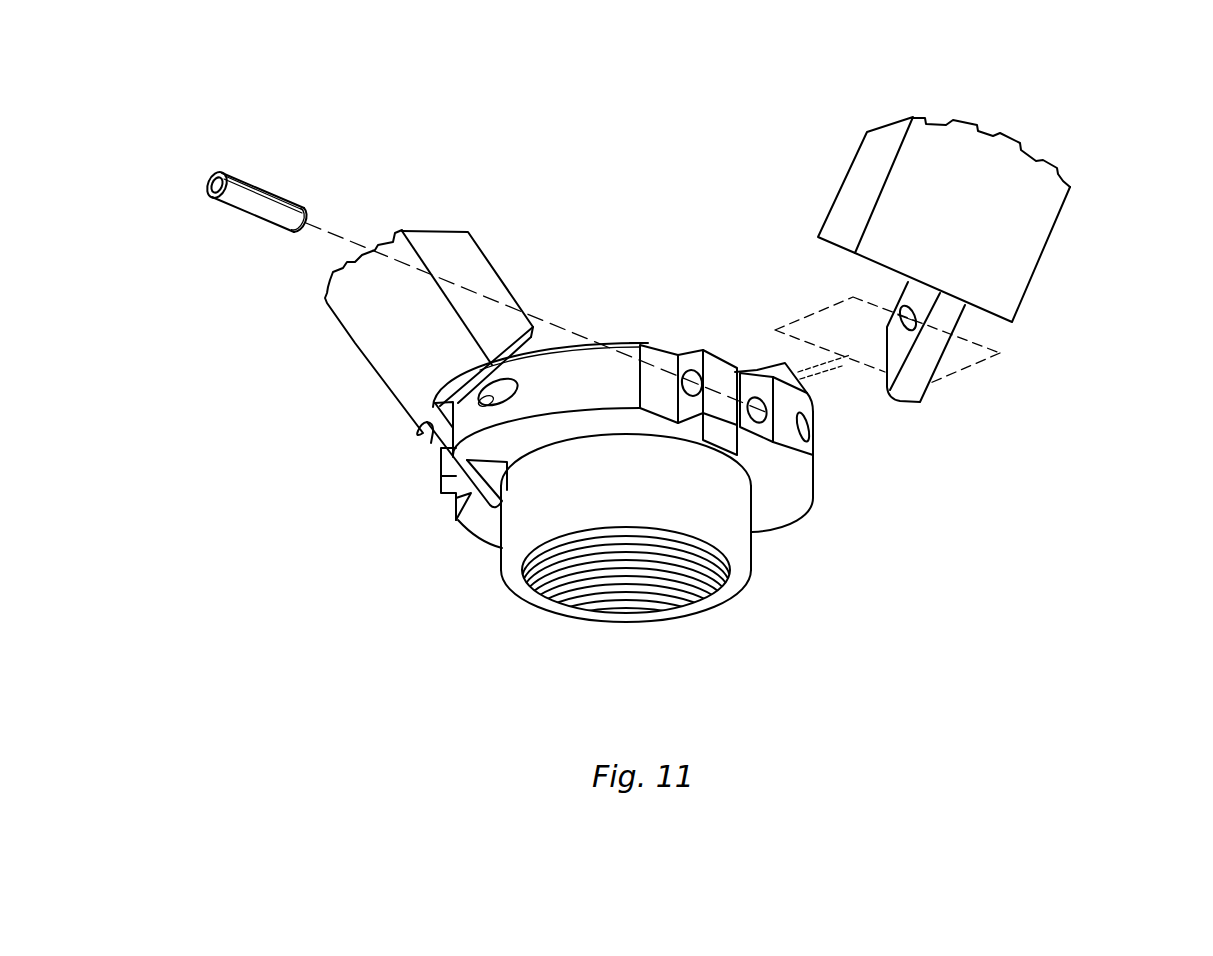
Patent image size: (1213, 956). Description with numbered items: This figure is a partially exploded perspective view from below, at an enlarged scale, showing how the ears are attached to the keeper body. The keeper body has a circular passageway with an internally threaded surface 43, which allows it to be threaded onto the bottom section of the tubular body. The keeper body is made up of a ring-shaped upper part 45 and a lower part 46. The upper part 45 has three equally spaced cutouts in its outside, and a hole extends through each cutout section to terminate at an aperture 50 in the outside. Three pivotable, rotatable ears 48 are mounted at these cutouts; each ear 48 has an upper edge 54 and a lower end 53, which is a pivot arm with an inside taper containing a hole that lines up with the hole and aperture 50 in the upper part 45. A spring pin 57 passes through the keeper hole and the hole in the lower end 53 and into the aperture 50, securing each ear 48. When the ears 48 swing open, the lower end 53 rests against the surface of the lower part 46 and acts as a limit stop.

The internally threaded surface 43 is at (642, 603).
The upper part 45 is at (813, 498).
The lower part 46 is at (752, 548).
The ear 48 is at (348, 337).
The aperture 50 is at (482, 408).
The lower end 53 is at (912, 400).
The upper edge 54 is at (1040, 148).
The spring pin 57 is at (206, 178).